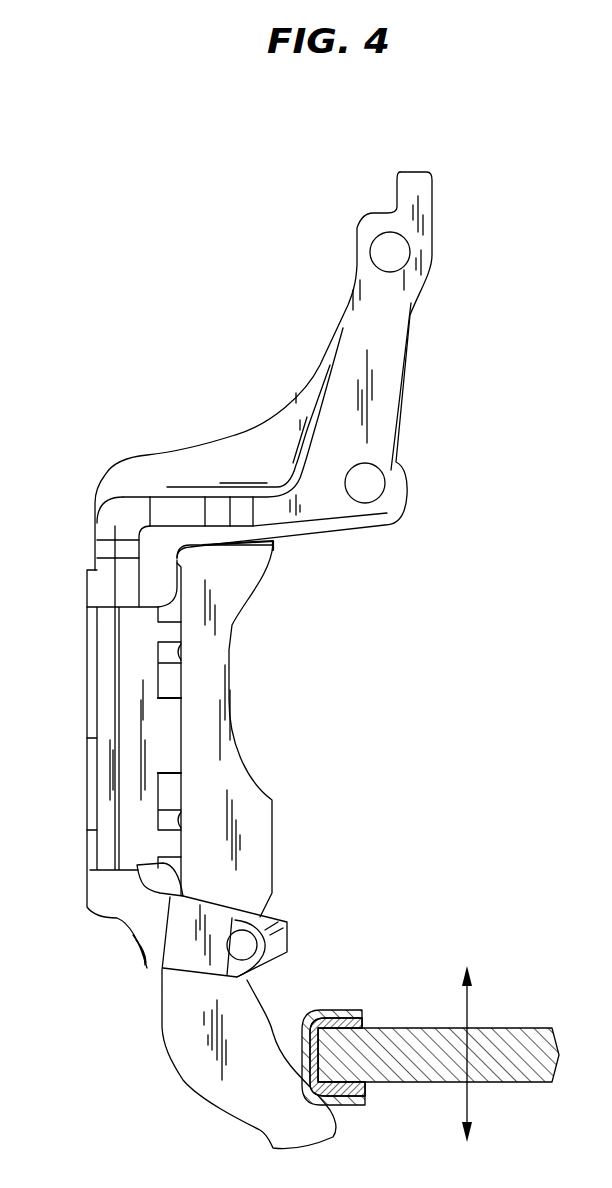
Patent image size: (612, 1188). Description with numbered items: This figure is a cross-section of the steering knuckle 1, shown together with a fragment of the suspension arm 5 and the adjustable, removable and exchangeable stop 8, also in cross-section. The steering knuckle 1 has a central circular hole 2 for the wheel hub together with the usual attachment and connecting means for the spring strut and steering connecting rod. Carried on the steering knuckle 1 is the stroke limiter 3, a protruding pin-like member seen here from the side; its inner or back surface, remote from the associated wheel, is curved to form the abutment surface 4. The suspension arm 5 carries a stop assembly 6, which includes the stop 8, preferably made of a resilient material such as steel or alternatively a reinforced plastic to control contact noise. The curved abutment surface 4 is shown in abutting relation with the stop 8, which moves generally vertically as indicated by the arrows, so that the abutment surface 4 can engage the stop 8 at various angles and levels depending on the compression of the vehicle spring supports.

The steering knuckle 1 is at (110, 432).
The central circular hole 2 is at (203, 706).
The stroke limiter 3 is at (268, 985).
The curved abutment surface 4 is at (262, 1032).
The suspension arm 5 is at (410, 1037).
The stop assembly 6 is at (368, 1023).
The stop 8 is at (330, 1017).